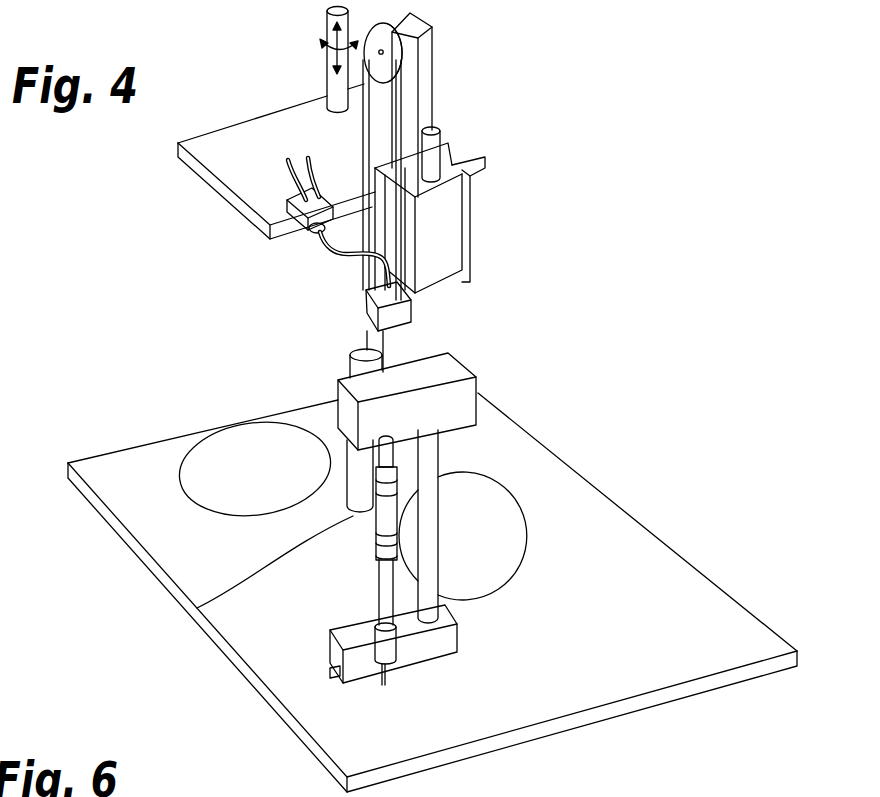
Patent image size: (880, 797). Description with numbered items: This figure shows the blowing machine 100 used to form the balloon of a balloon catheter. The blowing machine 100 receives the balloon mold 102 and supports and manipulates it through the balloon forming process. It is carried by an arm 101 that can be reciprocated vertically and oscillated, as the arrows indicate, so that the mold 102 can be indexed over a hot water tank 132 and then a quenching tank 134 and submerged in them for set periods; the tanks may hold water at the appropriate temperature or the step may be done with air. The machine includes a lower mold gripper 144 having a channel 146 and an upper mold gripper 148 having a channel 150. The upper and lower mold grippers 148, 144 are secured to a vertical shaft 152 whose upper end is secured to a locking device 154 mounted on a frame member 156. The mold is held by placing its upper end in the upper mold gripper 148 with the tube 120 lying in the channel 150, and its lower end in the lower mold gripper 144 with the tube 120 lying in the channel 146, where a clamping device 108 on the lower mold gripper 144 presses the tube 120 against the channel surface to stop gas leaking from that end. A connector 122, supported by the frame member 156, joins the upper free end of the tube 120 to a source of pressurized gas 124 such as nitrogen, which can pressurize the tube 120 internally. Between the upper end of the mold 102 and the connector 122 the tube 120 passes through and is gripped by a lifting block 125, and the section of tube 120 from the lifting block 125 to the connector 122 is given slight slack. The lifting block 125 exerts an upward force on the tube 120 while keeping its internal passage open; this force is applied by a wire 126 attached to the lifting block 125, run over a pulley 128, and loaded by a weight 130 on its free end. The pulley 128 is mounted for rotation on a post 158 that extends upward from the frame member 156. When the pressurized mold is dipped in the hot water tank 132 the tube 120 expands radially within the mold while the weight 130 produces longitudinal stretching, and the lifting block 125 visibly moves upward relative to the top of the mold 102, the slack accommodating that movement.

The blowing machine 100 is at (580, 256).
The arm 101 is at (340, 82).
The balloon mold 102 is at (197, 608).
The clamping device 108 is at (333, 675).
The tube 120 is at (363, 253).
The connector 122 is at (262, 212).
The source of pressurized gas 124 is at (215, 176).
The lifting block 125 is at (367, 308).
The wire 126 is at (405, 262).
The pulley 128 is at (392, 66).
The weight 130 is at (356, 353).
The hot water tank 132 is at (507, 490).
The quenching tank 134 is at (237, 443).
The lower mold gripper 144 is at (450, 650).
The channel 146 is at (385, 667).
The upper mold gripper 148 is at (475, 370).
The channel 150 is at (338, 400).
The vertical shaft 152 is at (430, 450).
The locking device 154 is at (440, 217).
The frame member 156 is at (207, 138).
The post 158 is at (423, 100).